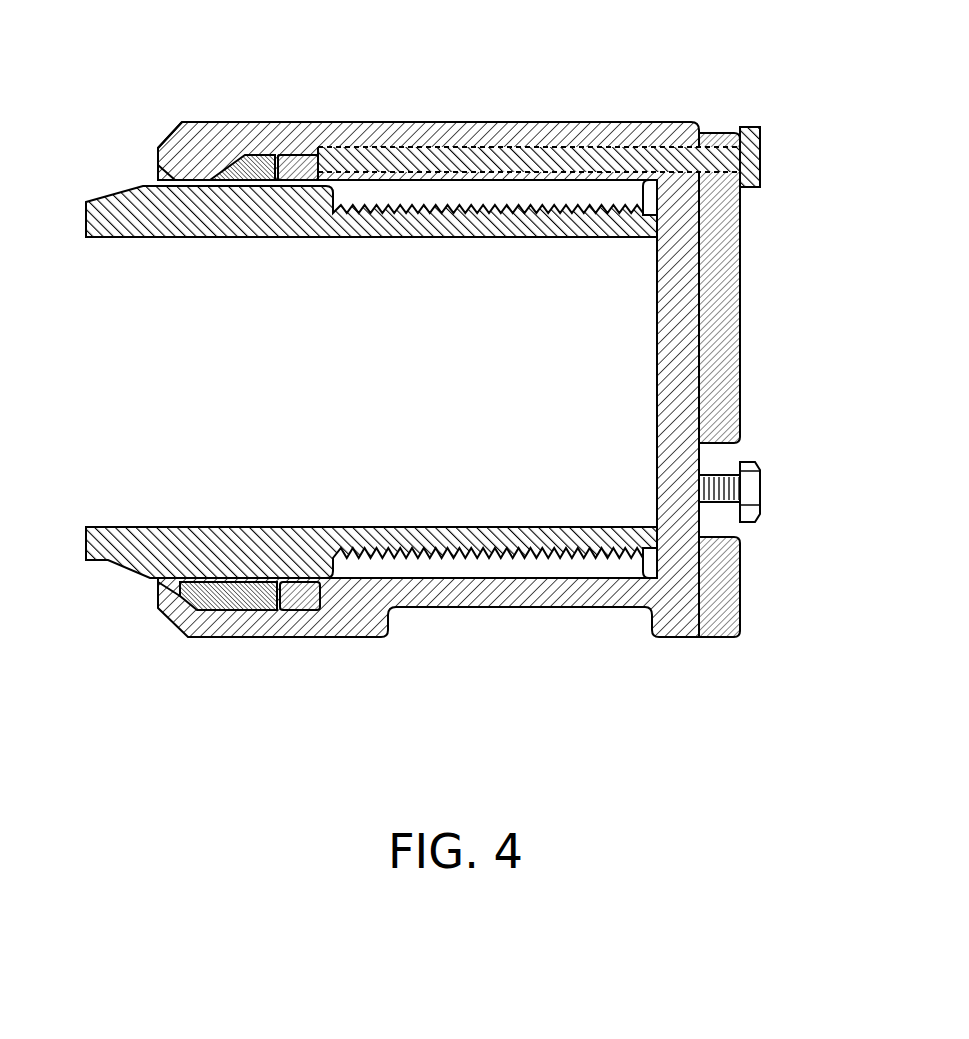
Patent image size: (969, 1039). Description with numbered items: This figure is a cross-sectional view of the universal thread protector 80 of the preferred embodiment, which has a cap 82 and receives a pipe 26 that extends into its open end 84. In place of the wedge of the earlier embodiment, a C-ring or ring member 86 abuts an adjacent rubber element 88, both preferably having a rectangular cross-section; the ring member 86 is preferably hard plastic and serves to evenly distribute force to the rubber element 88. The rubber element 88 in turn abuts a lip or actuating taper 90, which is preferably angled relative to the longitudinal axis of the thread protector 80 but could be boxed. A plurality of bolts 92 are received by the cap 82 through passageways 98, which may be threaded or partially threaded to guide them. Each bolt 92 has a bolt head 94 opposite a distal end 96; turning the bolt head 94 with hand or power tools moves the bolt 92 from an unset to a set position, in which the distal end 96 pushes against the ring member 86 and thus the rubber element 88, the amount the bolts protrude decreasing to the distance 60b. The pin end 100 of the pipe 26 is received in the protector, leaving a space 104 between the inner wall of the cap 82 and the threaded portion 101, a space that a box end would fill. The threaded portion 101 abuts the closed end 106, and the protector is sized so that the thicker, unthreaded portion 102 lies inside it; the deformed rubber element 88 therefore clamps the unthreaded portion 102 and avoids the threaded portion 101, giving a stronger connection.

The pipe 26 is at (112, 215).
The decreased bolt protrusion distance 60b is at (735, 340).
The universal thread protector 80 is at (838, 96).
The cap 82 is at (610, 122).
The open end 84 is at (124, 162).
The ring member 86 is at (297, 180).
The rubber element 88 is at (246, 165).
The actuating taper 90 is at (199, 178).
The bolt 92 is at (396, 148).
The bolt head 94 is at (760, 150).
The distal end 96 is at (298, 177).
The passageway 98 is at (527, 148).
The pin end 100 is at (495, 527).
The threaded portion 101 is at (598, 527).
The unthreaded thicker portion 102 is at (250, 217).
The space 104 is at (505, 607).
The closed end 106 is at (741, 314).